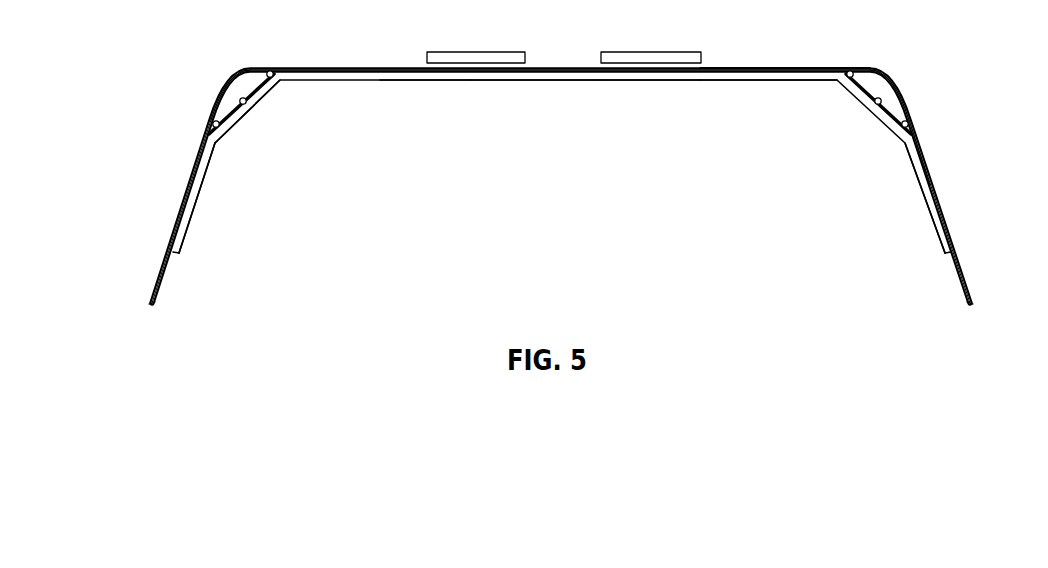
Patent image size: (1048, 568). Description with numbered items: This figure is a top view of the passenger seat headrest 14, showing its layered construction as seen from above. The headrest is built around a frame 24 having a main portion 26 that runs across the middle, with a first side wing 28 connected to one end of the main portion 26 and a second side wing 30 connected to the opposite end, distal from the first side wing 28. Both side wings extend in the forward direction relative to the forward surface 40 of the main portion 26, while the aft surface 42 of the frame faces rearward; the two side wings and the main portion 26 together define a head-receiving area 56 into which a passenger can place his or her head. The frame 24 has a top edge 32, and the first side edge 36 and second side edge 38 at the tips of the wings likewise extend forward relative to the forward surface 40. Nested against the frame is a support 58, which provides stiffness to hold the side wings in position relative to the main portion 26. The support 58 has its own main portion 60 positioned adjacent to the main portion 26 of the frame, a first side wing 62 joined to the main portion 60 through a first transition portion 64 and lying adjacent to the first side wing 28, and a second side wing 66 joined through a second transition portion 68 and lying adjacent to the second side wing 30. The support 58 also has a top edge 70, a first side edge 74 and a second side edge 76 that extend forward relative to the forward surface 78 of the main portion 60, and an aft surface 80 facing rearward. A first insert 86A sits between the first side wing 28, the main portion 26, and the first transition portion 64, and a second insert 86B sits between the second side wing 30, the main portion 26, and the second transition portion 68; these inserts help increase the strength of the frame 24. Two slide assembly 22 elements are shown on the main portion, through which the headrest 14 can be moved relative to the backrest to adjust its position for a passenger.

The passenger seat headrest 14 is at (689, 301).
The slide assembly 22 is at (487, 51).
The frame 24 is at (913, 120).
The main portion 26 is at (350, 67).
The first side wing 28 is at (184, 203).
The second side wing 30 is at (959, 256).
The top edge 32 is at (213, 122).
The first side edge 36 is at (152, 307).
The second side edge 38 is at (970, 307).
The forward surface 40 is at (785, 85).
The aft surface 42 is at (778, 65).
The head-receiving area 56 is at (373, 290).
The support 58 is at (443, 81).
The main portion 60 is at (540, 81).
The first side wing 62 is at (198, 201).
The first transition portion 64 is at (245, 115).
The second side wing 66 is at (922, 191).
The second transition portion 68 is at (872, 111).
The top edge 70 is at (623, 81).
The first side edge 74 is at (177, 255).
The second side edge 76 is at (946, 255).
The forward surface 78 is at (309, 86).
The aft surface 80 is at (252, 92).
The first insert 86A is at (233, 84).
The second insert 86B is at (888, 83).